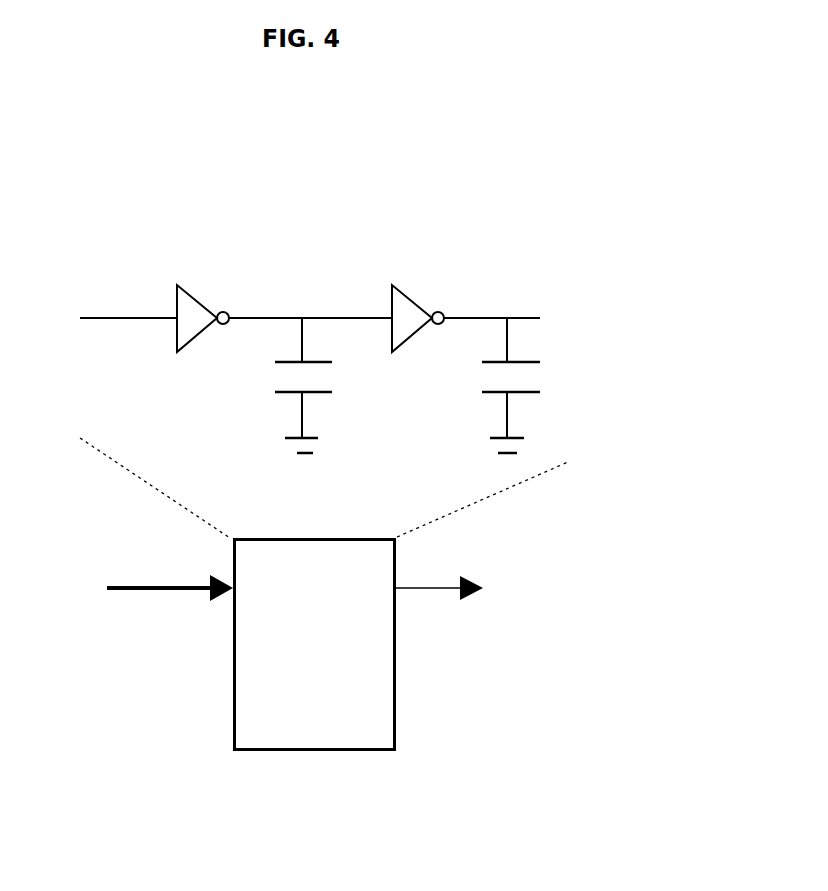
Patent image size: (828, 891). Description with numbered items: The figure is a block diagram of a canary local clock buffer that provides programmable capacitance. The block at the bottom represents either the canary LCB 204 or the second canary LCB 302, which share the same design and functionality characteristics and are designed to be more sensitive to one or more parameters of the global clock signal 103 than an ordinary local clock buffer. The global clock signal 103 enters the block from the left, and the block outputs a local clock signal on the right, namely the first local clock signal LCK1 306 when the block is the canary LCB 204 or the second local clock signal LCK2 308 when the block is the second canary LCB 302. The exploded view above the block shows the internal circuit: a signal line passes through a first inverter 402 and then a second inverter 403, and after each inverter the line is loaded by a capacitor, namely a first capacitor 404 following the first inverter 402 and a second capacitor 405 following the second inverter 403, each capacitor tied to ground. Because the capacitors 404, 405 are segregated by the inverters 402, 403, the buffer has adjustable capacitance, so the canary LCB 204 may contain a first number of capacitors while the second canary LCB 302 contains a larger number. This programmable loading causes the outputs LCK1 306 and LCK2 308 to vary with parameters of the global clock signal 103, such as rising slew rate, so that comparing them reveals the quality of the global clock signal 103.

The inverter 402 is at (188, 278).
The inverter 403 is at (411, 272).
The capacitor 404 is at (250, 404).
The capacitor 405 is at (572, 400).
The canary LCB 204 is at (315, 645).
The second canary LCB 302 is at (315, 645).
The global clock signal 103 is at (150, 620).
The first local clock signal LCK1 306 is at (484, 624).
The second local clock signal LCK2 308 is at (484, 624).